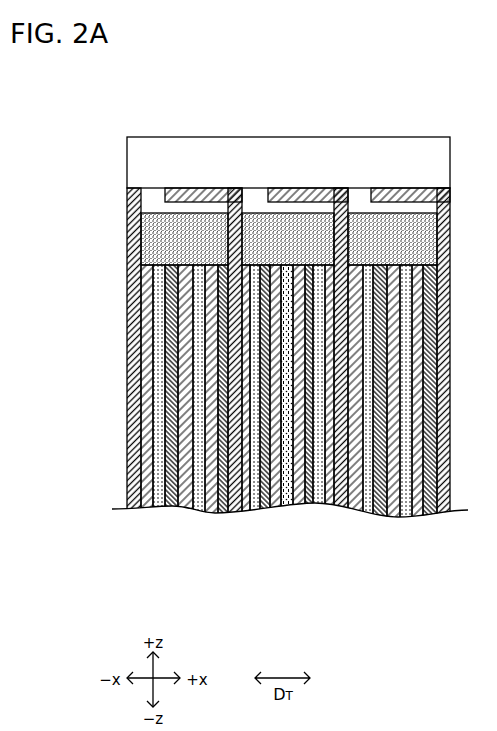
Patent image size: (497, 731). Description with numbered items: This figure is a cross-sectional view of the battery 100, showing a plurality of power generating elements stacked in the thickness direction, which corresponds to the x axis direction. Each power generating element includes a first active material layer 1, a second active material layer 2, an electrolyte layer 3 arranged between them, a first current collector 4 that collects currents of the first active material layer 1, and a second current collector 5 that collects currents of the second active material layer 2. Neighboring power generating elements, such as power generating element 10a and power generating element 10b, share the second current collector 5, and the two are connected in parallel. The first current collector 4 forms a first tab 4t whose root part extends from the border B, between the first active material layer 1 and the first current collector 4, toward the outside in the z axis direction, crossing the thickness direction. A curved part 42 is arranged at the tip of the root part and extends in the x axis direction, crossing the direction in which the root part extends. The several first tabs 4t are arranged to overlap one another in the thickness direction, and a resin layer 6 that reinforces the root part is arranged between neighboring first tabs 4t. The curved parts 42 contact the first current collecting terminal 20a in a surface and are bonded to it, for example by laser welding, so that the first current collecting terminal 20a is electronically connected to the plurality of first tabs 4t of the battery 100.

The battery 100 is at (358, 73).
The first current collecting terminal 20a is at (398, 148).
The first tab 4t is at (217, 85).
The curved part 42 is at (211, 190).
The resin layer 6 is at (152, 228).
The border B is at (228, 265).
The first current collector 4 is at (246, 509).
The first active material layer 1 is at (255, 509).
The electrolyte layer 3 is at (265, 508).
The second active material layer 2 is at (275, 507).
The second current collector 5 is at (287, 505).
The power generating element 10a is at (134, 562).
The power generating element 10b is at (185, 562).